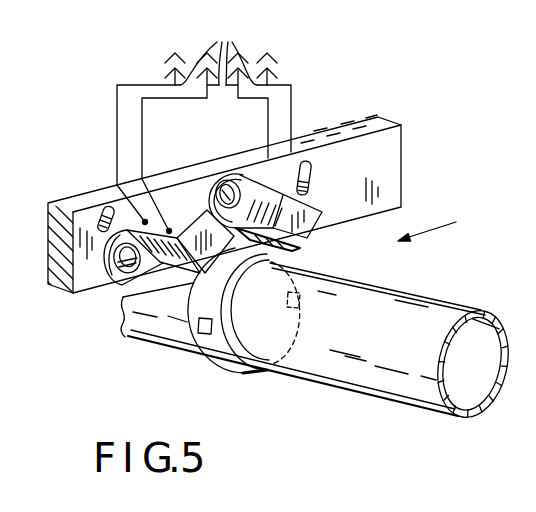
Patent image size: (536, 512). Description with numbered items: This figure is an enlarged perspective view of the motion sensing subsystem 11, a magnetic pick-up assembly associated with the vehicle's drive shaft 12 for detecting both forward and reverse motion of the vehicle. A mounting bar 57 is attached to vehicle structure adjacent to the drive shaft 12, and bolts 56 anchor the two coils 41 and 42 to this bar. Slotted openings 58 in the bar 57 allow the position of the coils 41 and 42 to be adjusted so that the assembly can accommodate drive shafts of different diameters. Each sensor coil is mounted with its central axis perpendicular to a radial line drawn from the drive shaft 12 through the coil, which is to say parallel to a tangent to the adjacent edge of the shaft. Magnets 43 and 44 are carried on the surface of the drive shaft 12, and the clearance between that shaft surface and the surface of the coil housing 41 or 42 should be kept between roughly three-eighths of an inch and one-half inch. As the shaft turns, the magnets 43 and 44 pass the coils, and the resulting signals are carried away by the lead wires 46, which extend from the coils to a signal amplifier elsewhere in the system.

The motion sensing subsystem 11 is at (467, 230).
The drive shaft 12 is at (438, 312).
The coil 41 is at (161, 264).
The coil 42 is at (309, 236).
The magnet 43 is at (204, 334).
The magnet 44 is at (305, 313).
The lead wires 46 is at (204, 126).
The bolts 56 is at (228, 190).
The mounting bar 57 is at (392, 166).
The slotted openings 58 is at (107, 213).